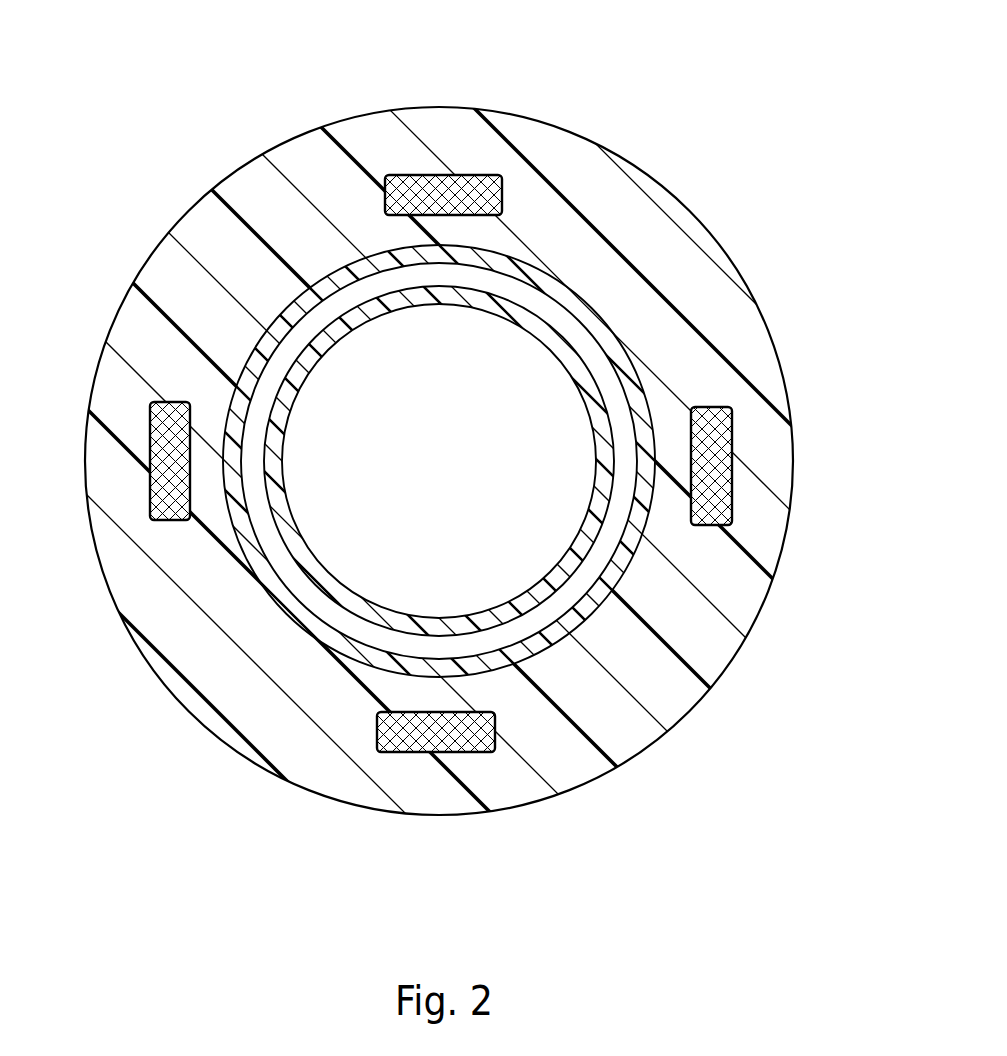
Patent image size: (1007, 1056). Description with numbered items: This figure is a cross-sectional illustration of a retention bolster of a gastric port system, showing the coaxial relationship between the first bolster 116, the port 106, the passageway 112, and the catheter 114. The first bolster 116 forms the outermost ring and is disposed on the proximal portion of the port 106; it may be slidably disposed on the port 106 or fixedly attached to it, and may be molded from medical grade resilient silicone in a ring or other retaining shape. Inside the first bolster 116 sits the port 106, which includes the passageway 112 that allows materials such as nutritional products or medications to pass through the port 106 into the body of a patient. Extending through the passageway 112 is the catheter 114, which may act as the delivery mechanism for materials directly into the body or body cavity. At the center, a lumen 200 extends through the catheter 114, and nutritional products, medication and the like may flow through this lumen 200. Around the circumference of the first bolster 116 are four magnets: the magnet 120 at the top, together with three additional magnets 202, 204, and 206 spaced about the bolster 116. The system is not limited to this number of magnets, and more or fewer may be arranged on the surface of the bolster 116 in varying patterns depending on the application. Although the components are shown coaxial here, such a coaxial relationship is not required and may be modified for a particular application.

The first bolster 116 is at (639, 168).
The port 106 is at (602, 312).
The catheter 114 is at (643, 535).
The passageway 112 is at (608, 395).
The lumen 200 is at (488, 487).
The magnet 120 is at (444, 183).
The magnet 202 is at (163, 460).
The magnet 206 is at (722, 460).
The magnet 204 is at (477, 752).